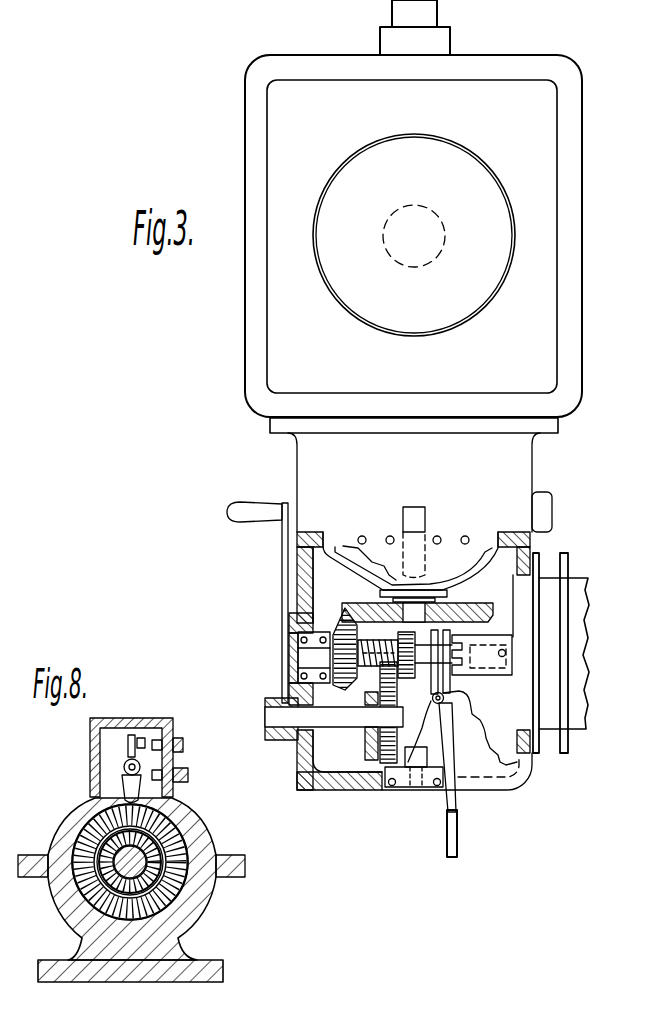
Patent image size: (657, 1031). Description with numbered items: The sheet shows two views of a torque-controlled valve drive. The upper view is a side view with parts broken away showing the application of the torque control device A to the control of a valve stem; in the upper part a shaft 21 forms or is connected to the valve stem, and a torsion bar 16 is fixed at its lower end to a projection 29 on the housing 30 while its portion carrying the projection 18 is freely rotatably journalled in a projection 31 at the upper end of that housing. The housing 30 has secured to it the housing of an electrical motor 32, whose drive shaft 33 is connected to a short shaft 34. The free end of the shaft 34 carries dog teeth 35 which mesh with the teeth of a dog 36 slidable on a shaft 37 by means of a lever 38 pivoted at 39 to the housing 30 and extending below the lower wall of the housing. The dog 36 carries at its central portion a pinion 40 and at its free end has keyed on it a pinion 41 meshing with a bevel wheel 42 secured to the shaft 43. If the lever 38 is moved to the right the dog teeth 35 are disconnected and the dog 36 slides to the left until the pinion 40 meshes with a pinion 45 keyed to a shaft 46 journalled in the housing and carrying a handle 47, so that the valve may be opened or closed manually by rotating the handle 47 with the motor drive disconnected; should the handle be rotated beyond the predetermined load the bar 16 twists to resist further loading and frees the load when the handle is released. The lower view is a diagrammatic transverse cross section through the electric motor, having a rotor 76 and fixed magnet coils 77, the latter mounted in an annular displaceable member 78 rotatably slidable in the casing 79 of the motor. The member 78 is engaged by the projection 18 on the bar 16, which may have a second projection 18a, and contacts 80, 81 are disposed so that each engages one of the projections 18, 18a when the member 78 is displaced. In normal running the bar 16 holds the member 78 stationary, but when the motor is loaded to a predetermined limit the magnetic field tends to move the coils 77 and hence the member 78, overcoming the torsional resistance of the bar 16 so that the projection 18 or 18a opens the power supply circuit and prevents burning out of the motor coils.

In FIG. 3, the shaft 21 is at (398, 212).
In FIG. 3, the torque control device A is at (530, 469).
In FIG. 3, the torsion bar 16 is at (418, 516).
In FIG. 8, the torsion bar 16 is at (128, 760).
In FIG. 3, the projection 31 is at (432, 538).
In FIG. 3, the drive shaft 33 is at (513, 575).
In FIG. 3, the electrical motor 32 is at (577, 584).
In FIG. 3, the handle 47 is at (284, 562).
In FIG. 3, the bevel wheel 42 is at (340, 610).
In FIG. 3, the shaft 43 is at (300, 652).
In FIG. 3, the pinion 41 is at (289, 685).
In FIG. 3, the shaft 46 is at (310, 717).
In FIG. 3, the dog 36 is at (456, 640).
In FIG. 3, the pinion 40 is at (420, 664).
In FIG. 3, the dog teeth 35 is at (462, 676).
In FIG. 3, the short shaft 34 is at (497, 678).
In FIG. 3, the shaft 37 is at (435, 704).
In FIG. 3, the lever 38 is at (456, 838).
In FIG. 3, the pivot 39 is at (446, 704).
In FIG. 3, the projection 29 is at (420, 790).
In FIG. 3, the housing 30 is at (398, 789).
In FIG. 3, the pinion 45 is at (344, 790).
In FIG. 8, the casing 79 is at (208, 905).
In FIG. 8, the rotor 76 is at (205, 846).
In FIG. 8, the fixed magnet coils 77 is at (152, 857).
In FIG. 8, the annular displaceable member 78 is at (186, 922).
In FIG. 8, the projection 18 is at (125, 785).
In FIG. 8, the second projection 18a is at (128, 743).
In FIG. 8, the contact 80 is at (120, 770).
In FIG. 8, the contact 81 is at (176, 777).